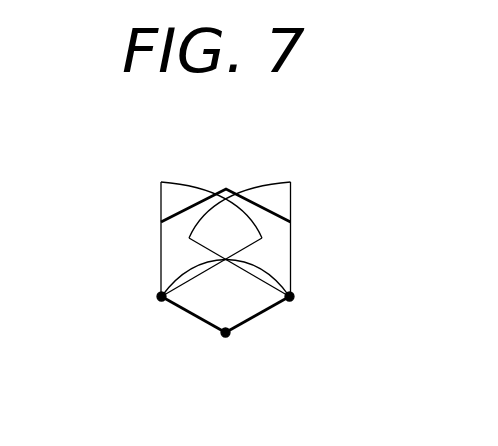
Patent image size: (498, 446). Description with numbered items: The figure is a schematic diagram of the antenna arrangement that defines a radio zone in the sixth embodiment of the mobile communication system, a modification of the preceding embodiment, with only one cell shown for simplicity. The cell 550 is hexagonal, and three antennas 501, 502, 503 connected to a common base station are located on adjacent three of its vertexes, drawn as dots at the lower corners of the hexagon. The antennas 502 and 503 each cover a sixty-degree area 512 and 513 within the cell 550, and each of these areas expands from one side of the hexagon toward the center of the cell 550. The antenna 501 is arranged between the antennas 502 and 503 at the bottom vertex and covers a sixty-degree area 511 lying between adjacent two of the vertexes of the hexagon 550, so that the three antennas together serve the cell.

The hexagonal cell 550 is at (226, 189).
The sixty-degree area 512 is at (161, 263).
The sixty-degree area 513 is at (291, 262).
The sixty-degree area 511 is at (247, 321).
The antenna 502 is at (161, 297).
The antenna 503 is at (290, 297).
The antenna 501 is at (226, 333).